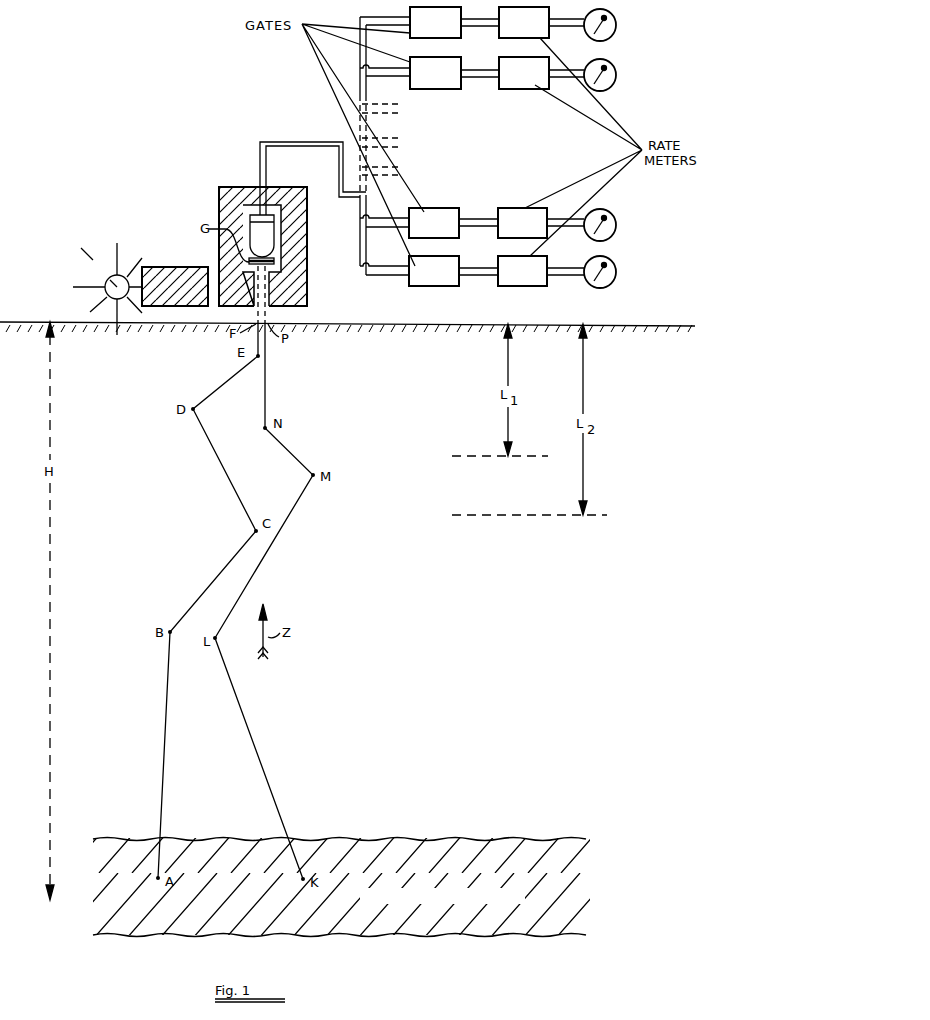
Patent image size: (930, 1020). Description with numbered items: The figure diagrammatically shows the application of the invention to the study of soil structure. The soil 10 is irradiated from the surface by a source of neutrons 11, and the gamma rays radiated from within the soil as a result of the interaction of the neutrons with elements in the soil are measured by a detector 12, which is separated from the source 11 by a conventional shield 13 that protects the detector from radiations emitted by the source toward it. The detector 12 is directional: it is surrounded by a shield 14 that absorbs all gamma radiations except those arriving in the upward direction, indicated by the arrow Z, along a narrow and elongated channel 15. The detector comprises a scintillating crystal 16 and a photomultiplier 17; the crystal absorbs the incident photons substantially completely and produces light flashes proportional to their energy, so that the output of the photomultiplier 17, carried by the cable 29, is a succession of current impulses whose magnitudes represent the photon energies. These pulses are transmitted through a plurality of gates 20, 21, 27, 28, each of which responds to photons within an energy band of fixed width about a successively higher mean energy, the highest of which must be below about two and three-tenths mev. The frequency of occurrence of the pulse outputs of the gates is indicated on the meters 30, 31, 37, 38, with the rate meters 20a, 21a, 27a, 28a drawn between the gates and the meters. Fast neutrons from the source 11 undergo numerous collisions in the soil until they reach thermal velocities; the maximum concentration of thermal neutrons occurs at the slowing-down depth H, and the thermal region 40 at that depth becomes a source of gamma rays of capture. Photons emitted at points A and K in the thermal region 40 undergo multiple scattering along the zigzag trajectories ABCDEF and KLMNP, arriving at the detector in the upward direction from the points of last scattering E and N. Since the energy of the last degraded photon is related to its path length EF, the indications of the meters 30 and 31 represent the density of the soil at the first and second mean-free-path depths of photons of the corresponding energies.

The soil 10 is at (347, 486).
The source of neutrons 11 is at (113, 282).
The detector 12 is at (232, 187).
The shield 13 is at (163, 268).
The shield 14 is at (293, 297).
The channel 15 is at (262, 296).
The scintillating crystal 16 is at (262, 258).
The photomultiplier 17 is at (263, 233).
The gate 20 is at (434, 271).
The rate meter 20a is at (522, 271).
The gate 21 is at (434, 223).
The rate meter 21a is at (522, 223).
The gate 27 is at (435, 73).
The rate meter 27a is at (524, 73).
The gate 28 is at (435, 22).
The rate meter 28a is at (524, 22).
The cable 29 is at (273, 144).
The meter 30 is at (617, 270).
The meter 31 is at (617, 222).
The meter 37 is at (617, 73).
The meter 38 is at (617, 22).
The thermal region 40 is at (440, 843).